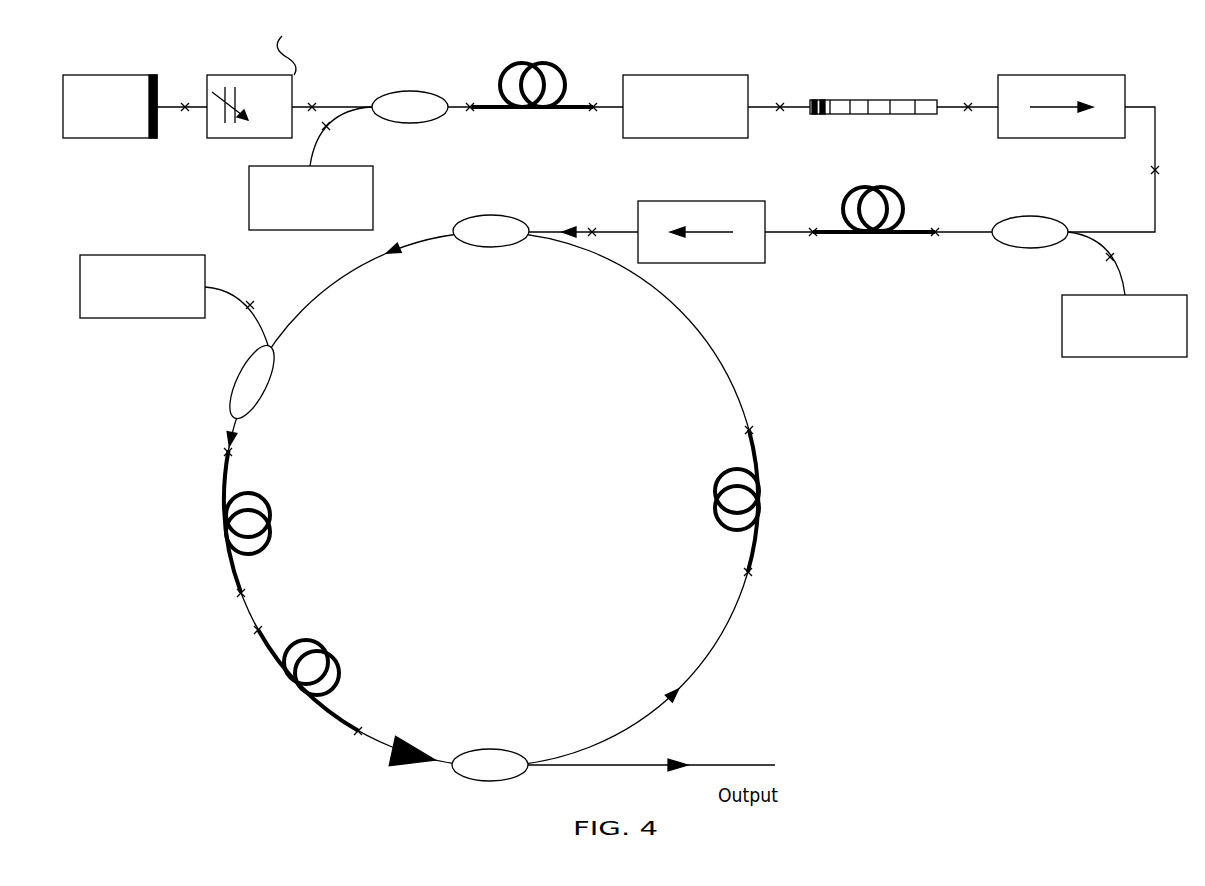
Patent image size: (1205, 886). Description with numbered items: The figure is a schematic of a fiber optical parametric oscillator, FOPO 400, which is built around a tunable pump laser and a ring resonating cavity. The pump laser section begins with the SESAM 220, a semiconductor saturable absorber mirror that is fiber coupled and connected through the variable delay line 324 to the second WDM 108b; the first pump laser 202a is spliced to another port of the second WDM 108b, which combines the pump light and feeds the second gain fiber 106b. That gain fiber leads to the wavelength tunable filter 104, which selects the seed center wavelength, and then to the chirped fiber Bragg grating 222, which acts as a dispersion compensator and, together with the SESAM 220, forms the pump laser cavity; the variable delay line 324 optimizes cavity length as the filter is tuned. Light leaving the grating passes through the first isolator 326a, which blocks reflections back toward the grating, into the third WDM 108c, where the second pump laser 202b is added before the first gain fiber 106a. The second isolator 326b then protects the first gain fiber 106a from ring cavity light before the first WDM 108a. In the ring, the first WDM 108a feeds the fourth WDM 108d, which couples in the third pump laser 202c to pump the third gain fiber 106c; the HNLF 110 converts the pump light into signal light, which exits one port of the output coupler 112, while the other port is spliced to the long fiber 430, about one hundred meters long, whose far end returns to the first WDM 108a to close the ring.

The FOPO 400 is at (1163, 707).
The SESAM 220 is at (142, 134).
The variable delay line 324 is at (288, 134).
The first WDM 108a is at (515, 242).
The second WDM 108b is at (432, 117).
The third WDM 108c is at (1053, 242).
The fourth WDM 108d is at (252, 381).
The first pump laser 202a is at (365, 221).
The second pump laser 202b is at (1178, 351).
The third pump laser 202c is at (198, 311).
The first gain fiber 106a is at (902, 198).
The second gain fiber 106b is at (556, 68).
The third gain fiber 106c is at (271, 547).
The wavelength tunable filter 104 is at (742, 129).
The chirped fiber Bragg grating 222 is at (810, 100).
The first isolator 326a is at (1117, 137).
The second isolator 326b is at (757, 261).
The HNLF 110 is at (338, 680).
The output coupler 112 is at (507, 776).
The long fiber 430 is at (712, 479).